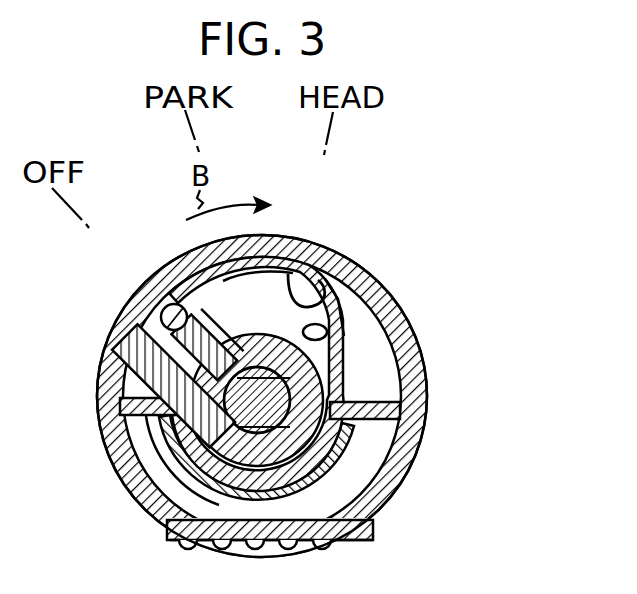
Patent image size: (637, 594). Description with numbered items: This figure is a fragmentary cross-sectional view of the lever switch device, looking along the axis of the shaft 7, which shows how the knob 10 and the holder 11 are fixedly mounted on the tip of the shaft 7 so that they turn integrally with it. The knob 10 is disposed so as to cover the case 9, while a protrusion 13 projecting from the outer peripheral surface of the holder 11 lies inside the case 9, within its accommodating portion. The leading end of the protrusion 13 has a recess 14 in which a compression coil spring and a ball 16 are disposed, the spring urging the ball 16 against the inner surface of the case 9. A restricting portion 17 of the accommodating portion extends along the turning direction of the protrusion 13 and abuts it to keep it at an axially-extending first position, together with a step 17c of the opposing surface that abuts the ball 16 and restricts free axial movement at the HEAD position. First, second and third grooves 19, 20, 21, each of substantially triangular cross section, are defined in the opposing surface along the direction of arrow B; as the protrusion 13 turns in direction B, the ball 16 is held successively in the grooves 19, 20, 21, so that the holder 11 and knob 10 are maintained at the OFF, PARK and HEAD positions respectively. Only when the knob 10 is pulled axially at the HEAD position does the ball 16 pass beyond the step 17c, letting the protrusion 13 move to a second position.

The shaft 7 is at (340, 470).
The case 9 is at (355, 310).
The knob 10 is at (118, 494).
The holder 11 is at (186, 532).
The protrusion 13 is at (103, 362).
The recess 14 is at (128, 392).
The ball 16 is at (172, 292).
The restricting portion 17 is at (340, 347).
The step 17c is at (340, 313).
The first groove 19 is at (130, 313).
The second groove 20 is at (284, 264).
The third groove 21 is at (330, 290).